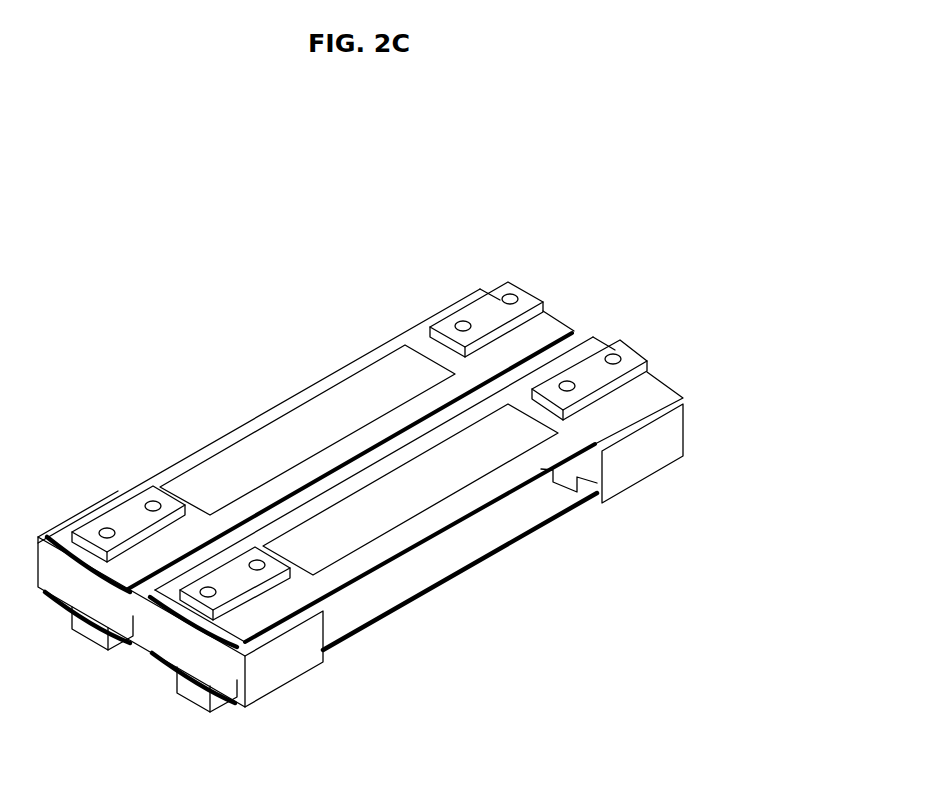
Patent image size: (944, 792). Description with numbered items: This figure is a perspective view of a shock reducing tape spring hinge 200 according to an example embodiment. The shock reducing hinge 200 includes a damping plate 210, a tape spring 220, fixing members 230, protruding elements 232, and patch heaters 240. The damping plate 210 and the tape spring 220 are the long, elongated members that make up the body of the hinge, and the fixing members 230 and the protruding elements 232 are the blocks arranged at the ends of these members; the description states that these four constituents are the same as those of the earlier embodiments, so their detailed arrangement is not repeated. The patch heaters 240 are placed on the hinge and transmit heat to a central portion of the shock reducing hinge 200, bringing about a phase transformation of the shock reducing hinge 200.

The shock reducing hinge 200 is at (343, 133).
The damping plate 210 is at (460, 562).
The tape spring 220 is at (490, 492).
The fixing members 230 is at (487, 305).
The protruding elements 232 is at (106, 530).
The patch heaters 240 is at (390, 503).